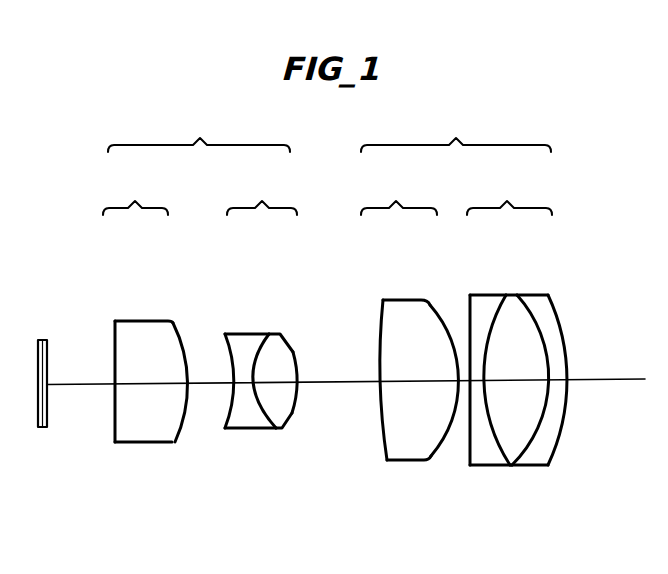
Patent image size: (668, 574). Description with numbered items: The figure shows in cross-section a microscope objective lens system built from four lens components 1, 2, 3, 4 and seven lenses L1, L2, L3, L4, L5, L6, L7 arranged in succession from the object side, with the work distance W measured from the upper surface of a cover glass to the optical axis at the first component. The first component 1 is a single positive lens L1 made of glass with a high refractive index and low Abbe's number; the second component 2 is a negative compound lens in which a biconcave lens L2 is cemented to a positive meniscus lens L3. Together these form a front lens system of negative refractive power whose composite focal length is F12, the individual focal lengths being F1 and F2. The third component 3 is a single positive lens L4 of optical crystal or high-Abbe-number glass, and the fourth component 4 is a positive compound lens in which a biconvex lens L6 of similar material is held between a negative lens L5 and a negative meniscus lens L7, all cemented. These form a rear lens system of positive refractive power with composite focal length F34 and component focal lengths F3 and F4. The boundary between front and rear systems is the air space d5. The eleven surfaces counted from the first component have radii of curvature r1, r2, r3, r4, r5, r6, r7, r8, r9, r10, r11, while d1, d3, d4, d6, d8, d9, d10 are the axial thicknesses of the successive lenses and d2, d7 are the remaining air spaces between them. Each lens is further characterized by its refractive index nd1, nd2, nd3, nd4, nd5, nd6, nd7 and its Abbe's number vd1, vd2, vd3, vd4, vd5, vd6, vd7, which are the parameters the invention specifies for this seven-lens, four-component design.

The work distance W is at (69, 383).
The composite focal length of front lens component system F12 is at (199, 126).
The composite focal length of rear lens component system F34 is at (456, 126).
The focal length of first component F1 is at (136, 166).
The focal length of second component F2 is at (265, 166).
The focal length of third component F3 is at (389, 166).
The focal length of fourth component F4 is at (504, 166).
The first component 1 is at (135, 195).
The second component 2 is at (262, 195).
The third component 3 is at (399, 195).
The fourth component 4 is at (509, 195).
The single lens L1 is at (147, 337).
The biconcave lens L2 is at (247, 330).
The positive meniscus lens L3 is at (297, 330).
The single lens L4 is at (401, 345).
The negative lens L5 is at (489, 339).
The biconvex lens L6 is at (546, 339).
The negative meniscus lens L7 is at (573, 339).
The radius of curvature r1 is at (114, 342).
The radius of curvature r2 is at (178, 328).
The radius of curvature r3 is at (229, 350).
The radius of curvature r4 is at (256, 345).
The radius of curvature r5 is at (295, 350).
The radius of curvature r6 is at (376, 342).
The radius of curvature r7 is at (432, 306).
The radius of curvature r8 is at (469, 324).
The radius of curvature r9 is at (496, 308).
The radius of curvature r10 is at (539, 242).
The radius of curvature r11 is at (563, 335).
The axial thickness d1 is at (145, 369).
The air space d2 is at (233, 381).
The axial thickness d3 is at (240, 383).
The axial thickness d4 is at (273, 383).
The air space d5 is at (321, 387).
The axial thickness d6 is at (406, 371).
The air space d7 is at (465, 428).
The axial thickness d8 is at (489, 462).
The axial thickness d9 is at (507, 380).
The axial thickness d10 is at (560, 378).
The refractive index nd1 is at (142, 440).
The refractive index nd2 is at (248, 425).
The refractive index nd3 is at (284, 418).
The refractive index nd4 is at (406, 452).
The refractive index nd5 is at (478, 465).
The refractive index nd6 is at (512, 450).
The refractive index nd7 is at (549, 452).
The Abbe's number vd1 is at (111, 556).
The Abbe's number vd2 is at (234, 556).
The Abbe's number vd3 is at (328, 556).
The Abbe's number vd4 is at (408, 556).
The Abbe's number vd5 is at (495, 556).
The Abbe's number vd6 is at (565, 556).
The Abbe's number vd7 is at (632, 556).